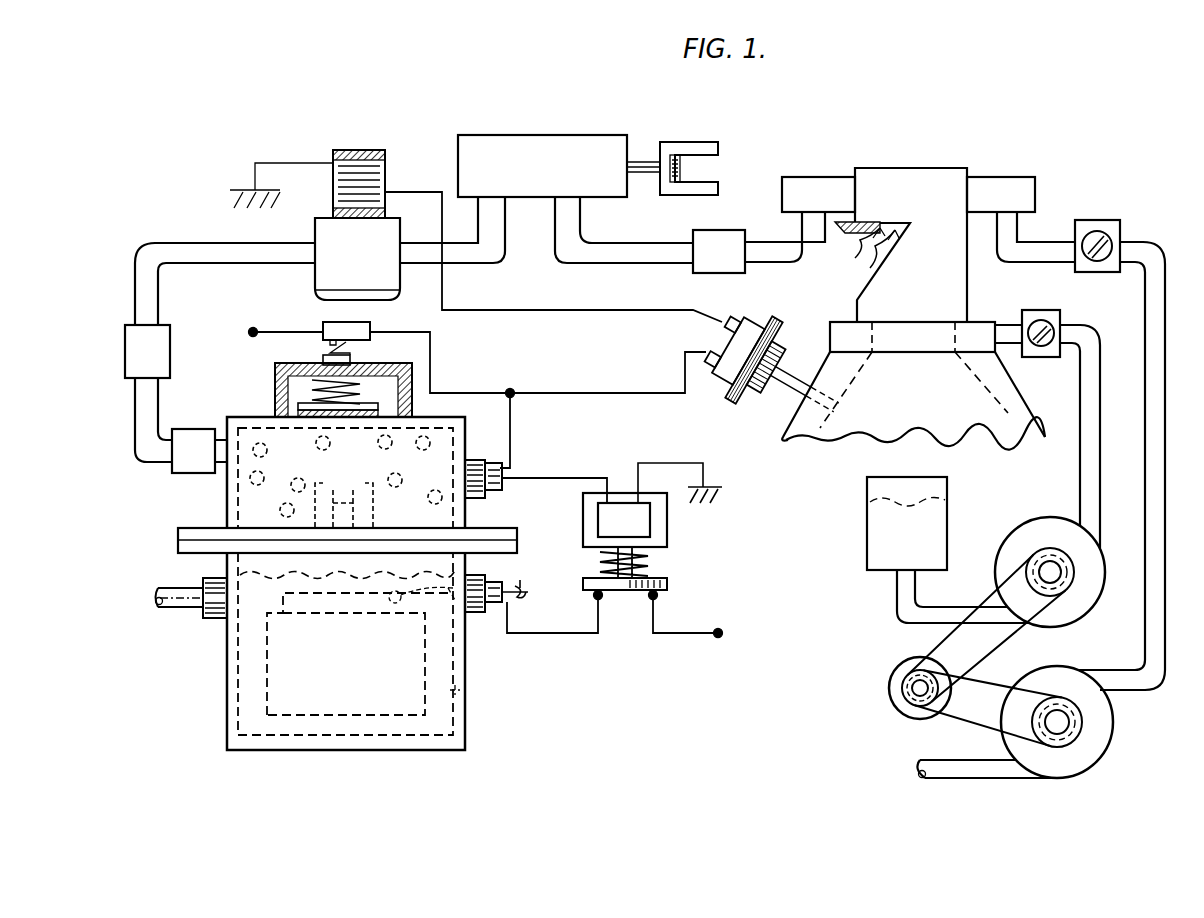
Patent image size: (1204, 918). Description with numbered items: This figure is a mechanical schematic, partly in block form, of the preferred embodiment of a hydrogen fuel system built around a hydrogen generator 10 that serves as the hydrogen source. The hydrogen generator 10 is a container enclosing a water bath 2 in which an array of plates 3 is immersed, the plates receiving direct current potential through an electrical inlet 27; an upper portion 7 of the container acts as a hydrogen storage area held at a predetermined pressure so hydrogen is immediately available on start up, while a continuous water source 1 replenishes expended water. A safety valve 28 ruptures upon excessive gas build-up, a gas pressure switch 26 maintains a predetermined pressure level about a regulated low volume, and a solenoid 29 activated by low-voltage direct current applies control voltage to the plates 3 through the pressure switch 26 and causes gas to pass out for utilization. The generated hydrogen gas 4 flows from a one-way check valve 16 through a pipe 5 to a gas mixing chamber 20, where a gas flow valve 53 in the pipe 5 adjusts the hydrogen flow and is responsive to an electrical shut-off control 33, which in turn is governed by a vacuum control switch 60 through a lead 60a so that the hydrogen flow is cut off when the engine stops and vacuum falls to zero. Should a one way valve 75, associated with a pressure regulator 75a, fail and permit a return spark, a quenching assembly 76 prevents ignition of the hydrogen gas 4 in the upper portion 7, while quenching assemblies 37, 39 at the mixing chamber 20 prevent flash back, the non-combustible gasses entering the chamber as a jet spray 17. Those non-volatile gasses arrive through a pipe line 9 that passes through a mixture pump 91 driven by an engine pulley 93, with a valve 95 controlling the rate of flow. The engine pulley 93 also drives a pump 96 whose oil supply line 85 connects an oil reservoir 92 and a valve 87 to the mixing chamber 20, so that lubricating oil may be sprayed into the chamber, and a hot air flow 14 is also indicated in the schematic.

The continuous water source 1 is at (180, 600).
The water bath 2 is at (470, 580).
The array of plates 3 is at (275, 648).
The hydrogen gas 4 is at (448, 502).
The pipe 5 is at (197, 252).
The upper portion 7 is at (275, 425).
The pipe line 9 is at (1163, 316).
The hydrogen generator 10 is at (450, 690).
The hot air flow 14 is at (864, 256).
The one-way check valve 16 is at (340, 497).
The jet spray 17 is at (880, 222).
The gas mixing chamber 20 is at (955, 287).
The gas pressure switch 26 is at (480, 462).
The electrical inlet 27 is at (480, 615).
The safety valve 28 is at (333, 322).
The solenoid 29 is at (650, 520).
The electrical shut-off control 33 is at (318, 238).
The quenching assembly 37 is at (812, 190).
The quenching assembly 39 is at (978, 192).
The gas flow valve 53 is at (551, 148).
The vacuum control switch 60 is at (768, 397).
The lead 60a is at (628, 312).
The one way valve 75 is at (160, 337).
The pressure regulator 75a is at (728, 265).
The quenching assembly 76 is at (185, 460).
The oil supply line 85 is at (1085, 436).
The valve 87 is at (1048, 314).
The mixture pump 91 is at (1090, 732).
The oil reservoir 92 is at (930, 525).
The engine pulley 93 is at (900, 700).
The valve 95 is at (1094, 223).
The pump 96 is at (1063, 612).